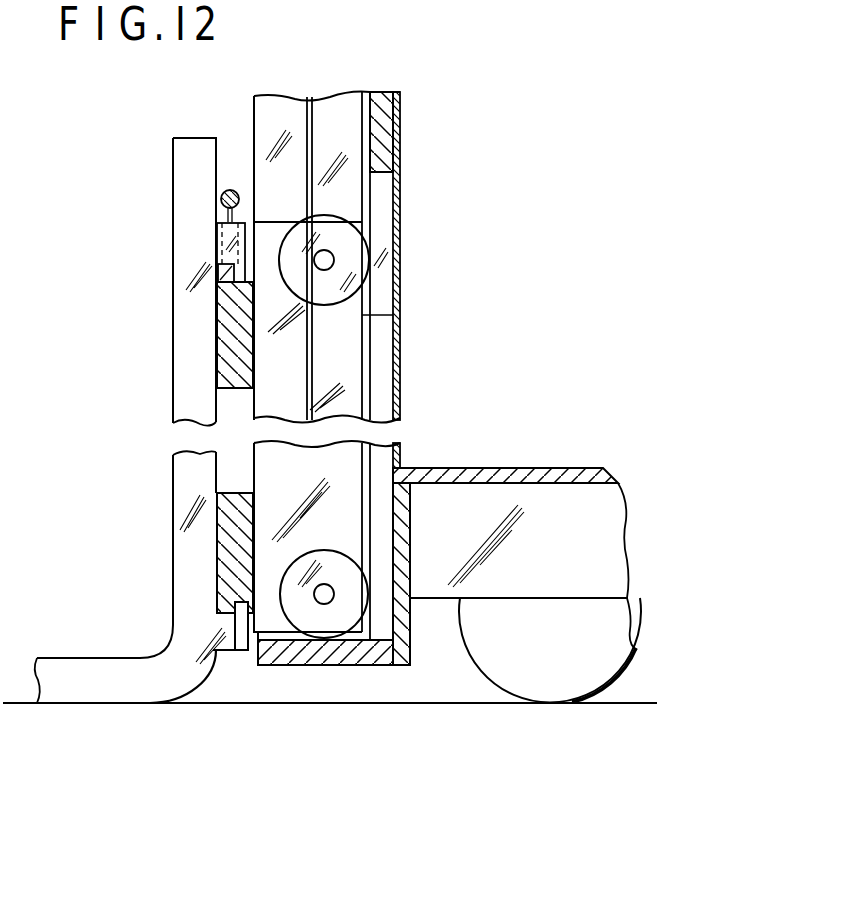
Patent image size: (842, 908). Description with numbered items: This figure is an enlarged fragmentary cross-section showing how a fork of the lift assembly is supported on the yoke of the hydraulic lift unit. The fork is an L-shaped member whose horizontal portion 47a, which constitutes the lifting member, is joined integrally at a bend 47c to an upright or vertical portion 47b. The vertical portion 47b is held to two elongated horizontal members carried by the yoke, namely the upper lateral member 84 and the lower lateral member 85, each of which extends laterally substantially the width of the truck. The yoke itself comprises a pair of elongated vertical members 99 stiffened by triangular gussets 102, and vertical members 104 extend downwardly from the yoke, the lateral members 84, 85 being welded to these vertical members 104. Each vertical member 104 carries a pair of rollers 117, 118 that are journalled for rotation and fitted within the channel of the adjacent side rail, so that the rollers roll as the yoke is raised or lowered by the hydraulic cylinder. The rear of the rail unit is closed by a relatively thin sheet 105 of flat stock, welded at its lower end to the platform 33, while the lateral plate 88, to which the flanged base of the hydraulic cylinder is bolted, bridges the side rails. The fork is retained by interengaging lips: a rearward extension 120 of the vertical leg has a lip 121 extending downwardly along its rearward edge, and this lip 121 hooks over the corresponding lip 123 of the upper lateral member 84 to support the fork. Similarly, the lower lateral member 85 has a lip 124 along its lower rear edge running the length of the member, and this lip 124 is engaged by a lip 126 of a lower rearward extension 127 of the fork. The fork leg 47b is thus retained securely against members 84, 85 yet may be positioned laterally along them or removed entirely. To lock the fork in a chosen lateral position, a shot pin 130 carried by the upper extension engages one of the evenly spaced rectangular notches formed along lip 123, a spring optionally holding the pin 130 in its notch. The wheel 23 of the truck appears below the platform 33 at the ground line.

The wheel 23 is at (480, 670).
The platform 33 is at (530, 468).
The horizontal portion 47a is at (75, 658).
The upright or vertical portion 47b is at (173, 205).
The bend 47c is at (197, 680).
The upper lateral member 84 is at (215, 338).
The lower lateral member 85 is at (217, 572).
The lateral plate 88 is at (342, 665).
The vertical members 99 is at (283, 100).
The gussets 102 is at (322, 118).
The vertical members 104 is at (402, 285).
The sheet 105 is at (402, 195).
The roller 117 is at (328, 305).
The roller 118 is at (347, 518).
The rearward extension 120 is at (240, 222).
The lip 121 is at (245, 257).
The lip 123 is at (215, 275).
The lip 124 is at (235, 618).
The lip 126 is at (250, 653).
The rearward extension 127 is at (237, 653).
The shot pin 130 is at (222, 196).